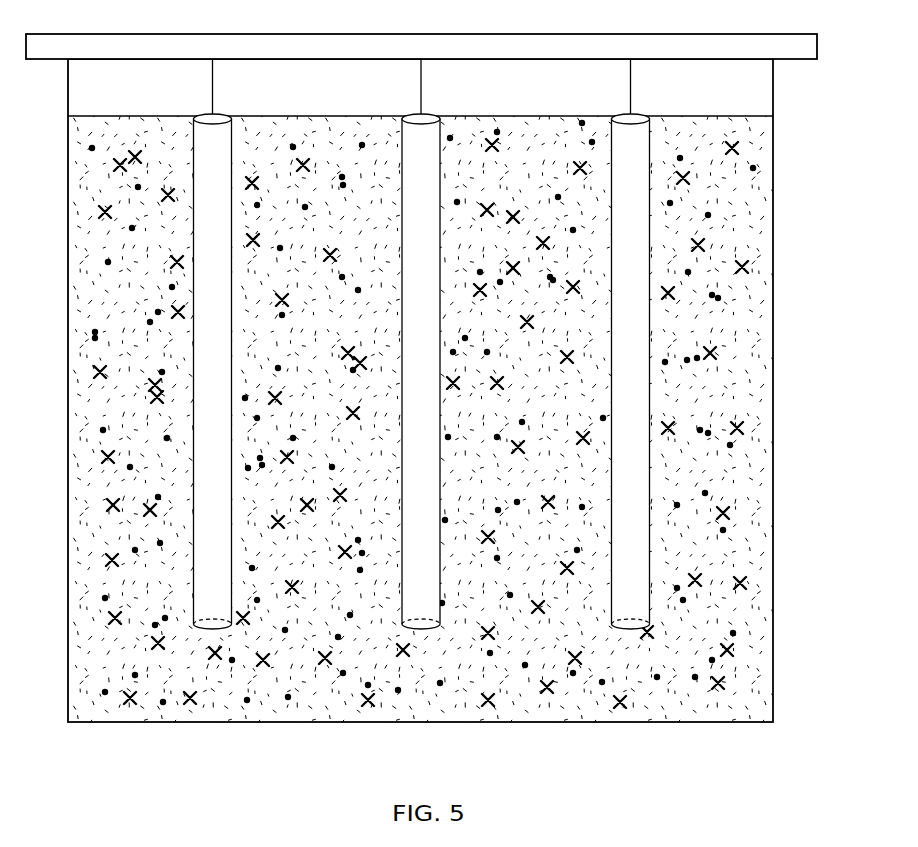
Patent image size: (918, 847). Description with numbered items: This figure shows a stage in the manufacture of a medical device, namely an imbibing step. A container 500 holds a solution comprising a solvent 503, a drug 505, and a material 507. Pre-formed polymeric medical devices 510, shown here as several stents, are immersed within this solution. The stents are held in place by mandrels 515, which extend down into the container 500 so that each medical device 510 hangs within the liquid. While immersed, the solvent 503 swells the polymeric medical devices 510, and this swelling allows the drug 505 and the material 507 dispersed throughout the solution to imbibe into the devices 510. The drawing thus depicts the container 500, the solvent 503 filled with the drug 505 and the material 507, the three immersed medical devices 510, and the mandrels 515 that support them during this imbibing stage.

The container 500 is at (443, 366).
The solvent 503 is at (451, 419).
The drug 505 is at (721, 298).
The material 507 is at (716, 352).
The pre-formed polymeric medical devices 510 is at (650, 230).
The mandrels 515 is at (631, 72).